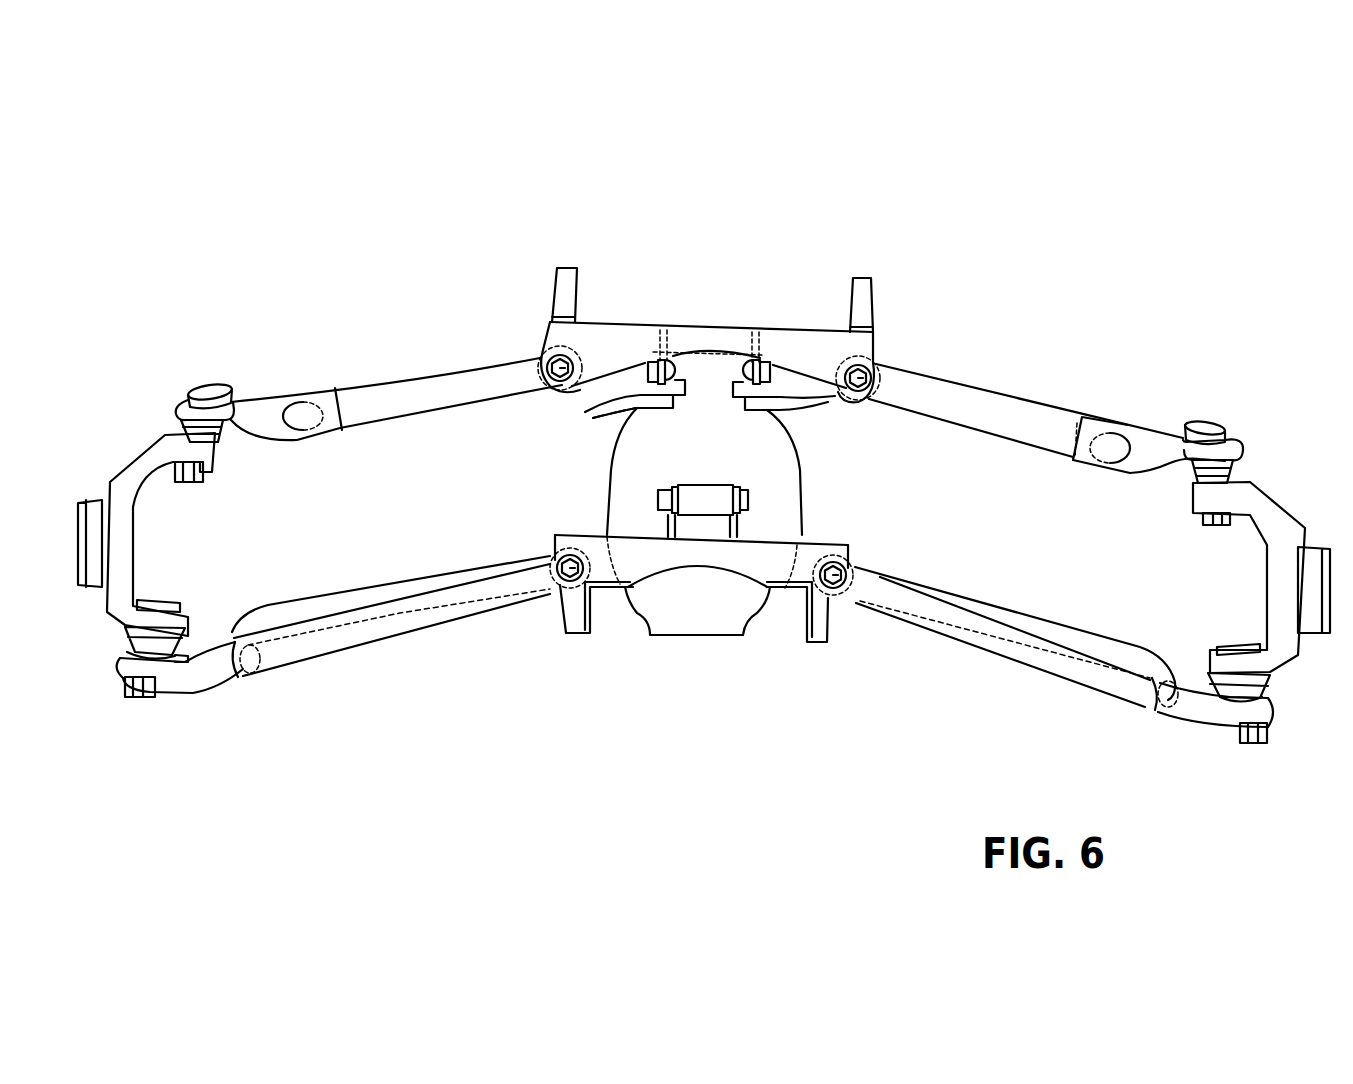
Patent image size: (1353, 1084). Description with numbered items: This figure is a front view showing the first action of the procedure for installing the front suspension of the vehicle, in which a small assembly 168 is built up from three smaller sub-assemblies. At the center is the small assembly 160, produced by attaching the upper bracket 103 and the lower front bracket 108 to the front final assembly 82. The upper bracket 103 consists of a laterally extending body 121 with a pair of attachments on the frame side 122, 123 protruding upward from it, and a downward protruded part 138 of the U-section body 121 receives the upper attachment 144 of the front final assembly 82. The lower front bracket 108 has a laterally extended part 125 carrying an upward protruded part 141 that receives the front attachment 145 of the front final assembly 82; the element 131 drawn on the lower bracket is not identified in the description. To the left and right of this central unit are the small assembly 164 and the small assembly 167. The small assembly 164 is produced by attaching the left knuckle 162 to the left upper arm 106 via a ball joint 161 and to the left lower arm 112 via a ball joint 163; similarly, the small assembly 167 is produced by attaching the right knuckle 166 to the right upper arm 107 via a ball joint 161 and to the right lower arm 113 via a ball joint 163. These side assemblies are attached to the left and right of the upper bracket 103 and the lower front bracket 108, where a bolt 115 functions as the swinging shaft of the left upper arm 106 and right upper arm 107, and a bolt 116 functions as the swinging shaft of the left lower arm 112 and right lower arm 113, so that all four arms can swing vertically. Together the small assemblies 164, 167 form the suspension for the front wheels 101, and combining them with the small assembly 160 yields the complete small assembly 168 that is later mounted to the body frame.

The small assembly 168 is at (492, 222).
The upper bracket 103 is at (713, 325).
The attachment on the frame side 123 is at (576, 280).
The attachment on the frame side 122 is at (873, 284).
The body of the bracket 121 is at (812, 348).
The bolt 115 is at (540, 360).
The right upper arm 107 is at (420, 377).
The small assembly 167 is at (305, 388).
The left upper arm 106 is at (997, 397).
The small assembly 164 is at (1117, 420).
The front wheels 101 is at (1160, 427).
The ball joint 161 is at (177, 411).
The right knuckle 166 is at (140, 540).
The left knuckle 162 is at (1267, 580).
The front final assembly 82 is at (605, 471).
The downward protruded part 138 is at (636, 398).
The upper attachment 144 is at (738, 370).
The front attachment 145 is at (703, 486).
The upward protruded part 141 is at (740, 524).
The laterally extended part 125 is at (595, 545).
The bolt 116 is at (557, 578).
The bracket flange 131 is at (580, 622).
The lower front bracket 108 is at (698, 572).
The small assembly 160 is at (652, 577).
The right lower arm 113 is at (393, 637).
The left lower arm 112 is at (1003, 658).
The ball joint 163 is at (127, 637).